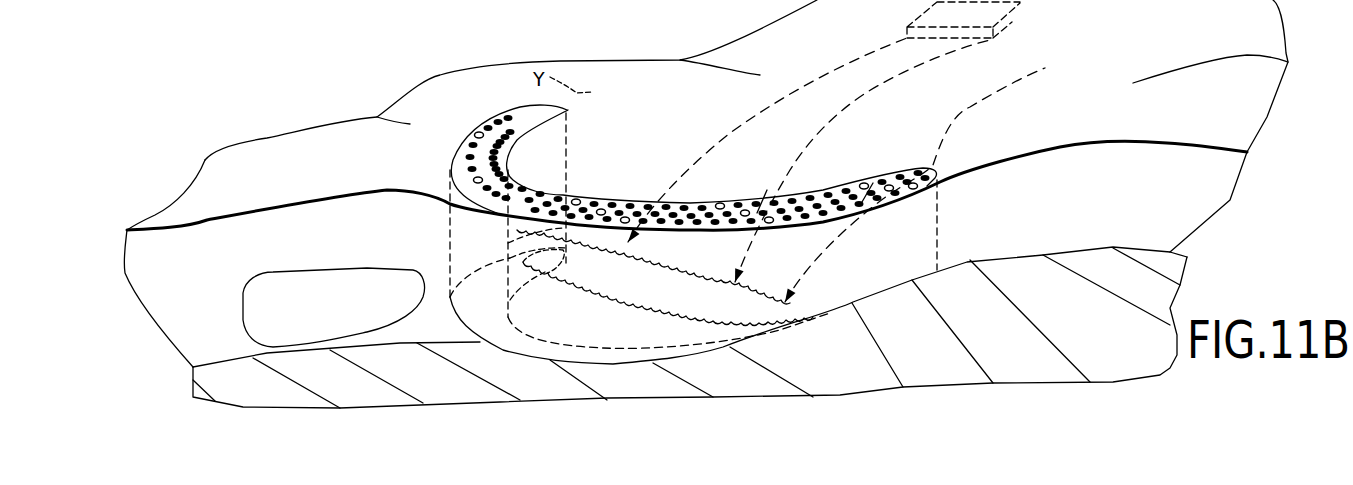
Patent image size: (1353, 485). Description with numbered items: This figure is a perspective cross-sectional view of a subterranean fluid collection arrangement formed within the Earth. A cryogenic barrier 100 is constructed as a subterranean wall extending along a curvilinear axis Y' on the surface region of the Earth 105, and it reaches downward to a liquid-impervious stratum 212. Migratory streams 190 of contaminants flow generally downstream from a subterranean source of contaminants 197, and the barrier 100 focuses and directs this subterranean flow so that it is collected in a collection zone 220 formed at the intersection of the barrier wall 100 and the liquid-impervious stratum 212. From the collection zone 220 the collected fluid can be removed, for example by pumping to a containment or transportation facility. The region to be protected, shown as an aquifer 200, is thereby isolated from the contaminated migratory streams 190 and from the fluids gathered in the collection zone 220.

The barrier 100 is at (405, 228).
The surface region of the Earth 105 is at (957, 162).
The migratory streams 190 is at (842, 117).
The subterranean source of contaminants 197 is at (1003, 15).
The aquifer 200 is at (345, 310).
The liquid-impervious stratum 212 is at (888, 353).
The collection zone 220 is at (643, 288).